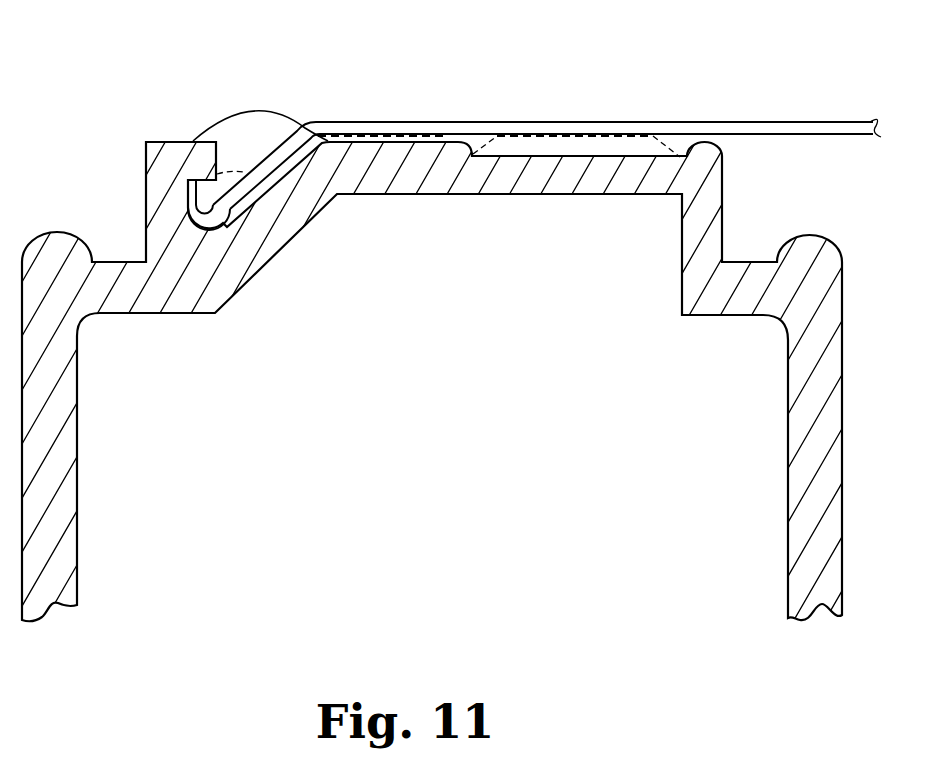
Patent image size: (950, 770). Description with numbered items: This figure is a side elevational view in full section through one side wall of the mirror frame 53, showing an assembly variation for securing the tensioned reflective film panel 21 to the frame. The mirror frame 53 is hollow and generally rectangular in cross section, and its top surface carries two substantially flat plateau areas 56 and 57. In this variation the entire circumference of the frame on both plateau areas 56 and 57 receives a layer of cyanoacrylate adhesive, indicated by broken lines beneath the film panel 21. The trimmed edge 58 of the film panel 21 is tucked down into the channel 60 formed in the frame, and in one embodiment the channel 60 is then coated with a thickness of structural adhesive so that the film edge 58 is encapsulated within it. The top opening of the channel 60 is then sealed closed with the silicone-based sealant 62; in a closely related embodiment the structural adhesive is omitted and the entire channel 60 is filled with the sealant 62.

The film panel 21 is at (783, 122).
The mirror frame 53 is at (567, 180).
The plateau area 56 is at (636, 122).
The plateau area 57 is at (402, 115).
The trimmed edge 58 is at (198, 192).
The channel 60 is at (222, 227).
The silicone-based sealant 62 is at (262, 118).